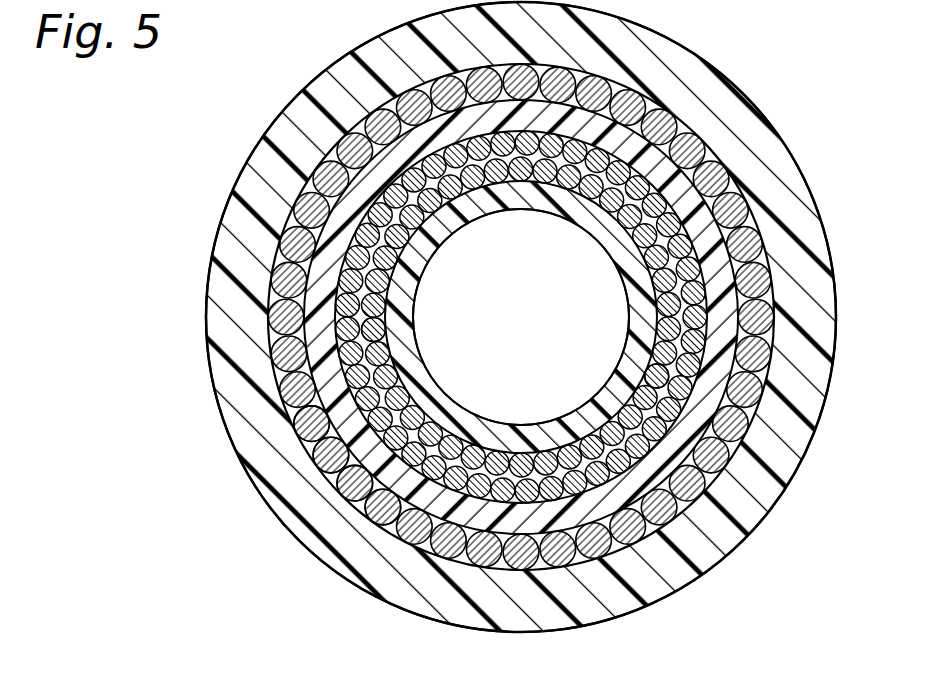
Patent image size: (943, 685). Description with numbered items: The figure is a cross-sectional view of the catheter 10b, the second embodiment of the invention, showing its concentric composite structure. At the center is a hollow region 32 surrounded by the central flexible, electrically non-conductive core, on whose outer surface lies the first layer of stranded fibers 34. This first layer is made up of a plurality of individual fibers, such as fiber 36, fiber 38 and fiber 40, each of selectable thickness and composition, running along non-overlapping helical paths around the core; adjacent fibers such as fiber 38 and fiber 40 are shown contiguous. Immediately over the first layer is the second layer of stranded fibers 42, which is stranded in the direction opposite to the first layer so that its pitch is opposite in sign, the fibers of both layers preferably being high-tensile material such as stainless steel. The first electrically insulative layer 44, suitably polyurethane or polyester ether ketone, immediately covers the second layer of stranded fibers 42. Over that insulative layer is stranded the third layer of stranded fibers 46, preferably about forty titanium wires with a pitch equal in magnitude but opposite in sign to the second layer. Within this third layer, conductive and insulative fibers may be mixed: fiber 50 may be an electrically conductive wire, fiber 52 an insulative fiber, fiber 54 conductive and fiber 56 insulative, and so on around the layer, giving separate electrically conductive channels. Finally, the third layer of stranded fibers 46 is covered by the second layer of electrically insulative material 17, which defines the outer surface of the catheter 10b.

The catheter 10b is at (262, 127).
The second layer of electrically insulative material 17 is at (743, 110).
The third layer of stranded fibers 46 is at (706, 153).
The first electrically insulative layer 44 is at (708, 238).
The fiber 36 is at (576, 182).
The fiber 38 is at (372, 333).
The fiber 40 is at (379, 360).
The first layer of stranded fibers 34 is at (636, 298).
The second layer of stranded fibers 42 is at (652, 367).
The central bore 32 is at (505, 426).
The fiber 50 is at (385, 510).
The fiber 52 is at (357, 492).
The fiber 54 is at (332, 472).
The fiber 56 is at (312, 440).